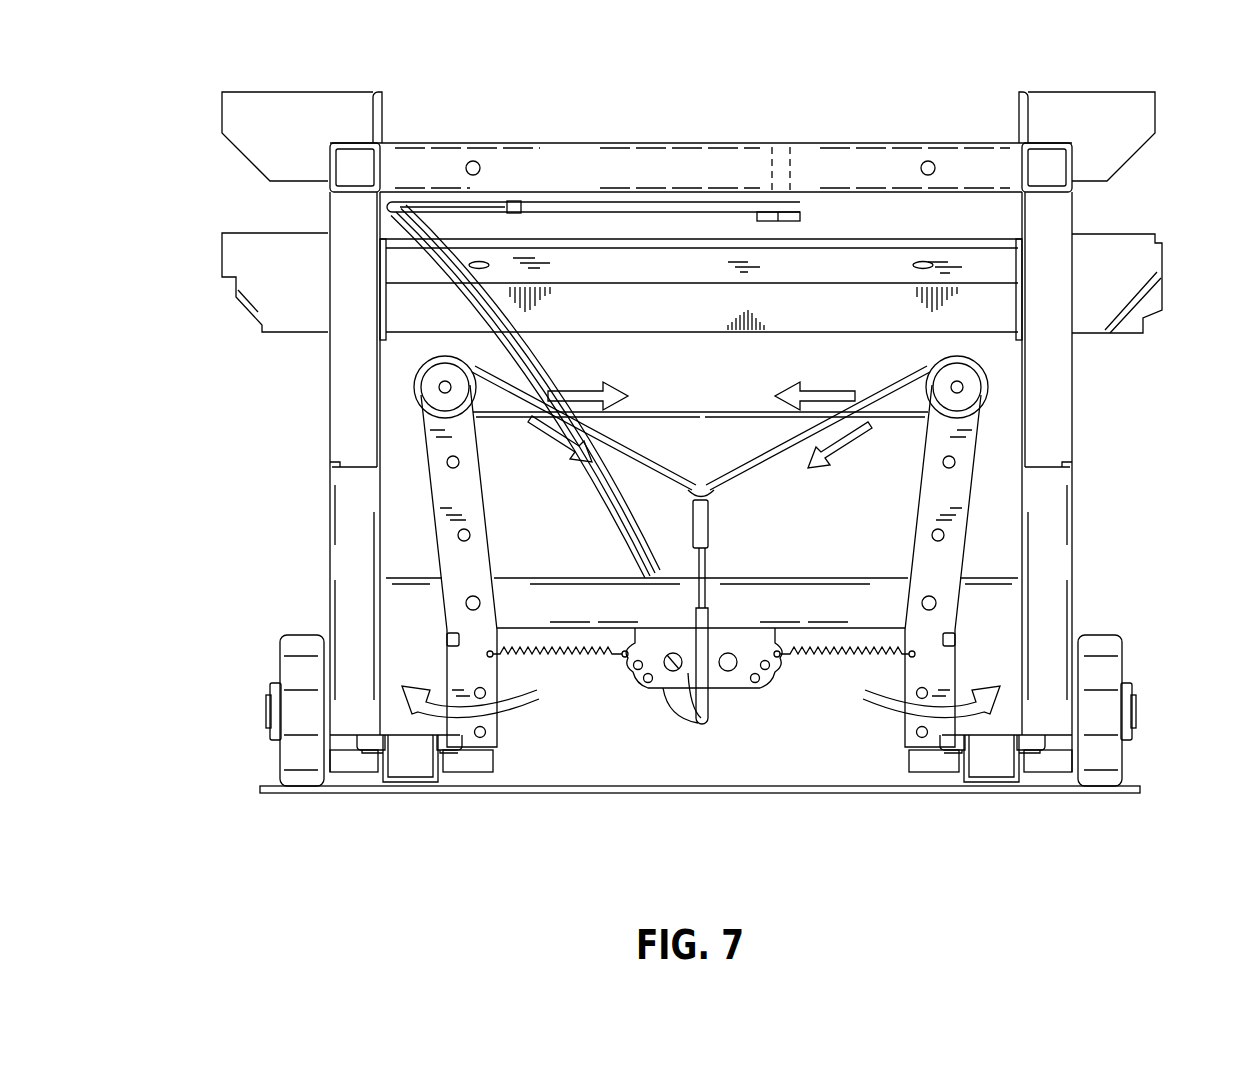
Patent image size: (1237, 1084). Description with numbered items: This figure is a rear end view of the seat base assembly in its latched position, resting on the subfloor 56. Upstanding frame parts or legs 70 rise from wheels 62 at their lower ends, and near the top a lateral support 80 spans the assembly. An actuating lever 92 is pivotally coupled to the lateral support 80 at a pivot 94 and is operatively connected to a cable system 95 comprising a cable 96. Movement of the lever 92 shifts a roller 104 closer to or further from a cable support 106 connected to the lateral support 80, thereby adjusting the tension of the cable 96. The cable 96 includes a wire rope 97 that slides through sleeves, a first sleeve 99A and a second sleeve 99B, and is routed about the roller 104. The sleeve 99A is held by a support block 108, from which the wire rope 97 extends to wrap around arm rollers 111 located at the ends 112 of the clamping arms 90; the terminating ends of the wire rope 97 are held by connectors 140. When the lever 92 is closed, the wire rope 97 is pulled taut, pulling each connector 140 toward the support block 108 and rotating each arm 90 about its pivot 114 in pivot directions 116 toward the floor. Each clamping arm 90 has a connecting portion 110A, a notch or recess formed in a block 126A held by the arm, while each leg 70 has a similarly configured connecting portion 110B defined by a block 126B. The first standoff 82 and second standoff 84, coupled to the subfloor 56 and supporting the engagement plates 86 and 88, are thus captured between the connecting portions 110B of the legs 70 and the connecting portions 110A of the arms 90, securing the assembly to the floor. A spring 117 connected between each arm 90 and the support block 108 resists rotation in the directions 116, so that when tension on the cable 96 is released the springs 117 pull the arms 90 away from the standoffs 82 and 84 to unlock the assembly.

The subfloor 56 is at (826, 794).
The wheels 62 is at (297, 648).
The upstanding frame parts 70 is at (343, 558).
The lateral support 80 is at (515, 152).
The first standoff 82 is at (1005, 784).
The second standoff 84 is at (405, 784).
The engagement plate 86 is at (1033, 742).
The engagement plate 88 is at (370, 742).
The clamping arms 90 is at (412, 456).
The actuating lever 92 is at (590, 184).
The pivot 94 is at (792, 165).
The cable system 95 is at (650, 352).
The cable 96 is at (726, 202).
The wire rope 97 is at (695, 395).
The first sleeve 99A is at (700, 700).
The second sleeve 99B is at (640, 527).
The roller 104 is at (805, 212).
The cable support 106 is at (447, 202).
The support block 108 is at (742, 672).
The connecting portion 110A is at (468, 758).
The connecting portion 110B is at (345, 742).
The arm rollers 111 is at (462, 365).
The ends 112 is at (410, 387).
The pivot 114 is at (480, 603).
The pivot directions 116 is at (505, 705).
The spring 117 is at (583, 670).
The block 126A is at (452, 772).
The block 126B is at (355, 772).
The connectors 140 is at (708, 530).